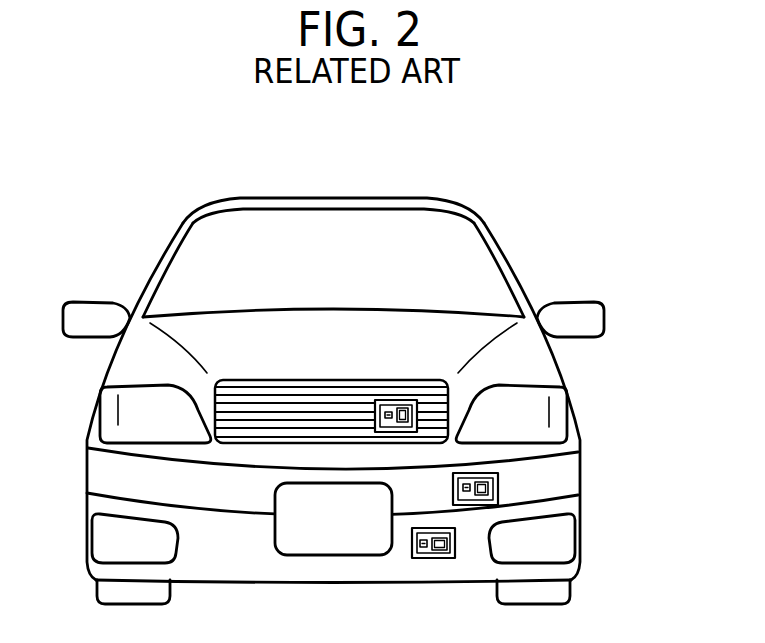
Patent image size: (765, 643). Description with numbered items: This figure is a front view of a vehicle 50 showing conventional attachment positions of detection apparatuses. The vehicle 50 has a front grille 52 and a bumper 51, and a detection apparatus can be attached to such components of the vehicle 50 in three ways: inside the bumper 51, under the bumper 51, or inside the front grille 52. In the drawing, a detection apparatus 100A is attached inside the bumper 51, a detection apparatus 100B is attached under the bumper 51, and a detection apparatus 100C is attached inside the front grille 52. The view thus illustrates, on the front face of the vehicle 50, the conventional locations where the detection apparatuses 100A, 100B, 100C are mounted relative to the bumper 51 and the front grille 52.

The vehicle 50 is at (384, 177).
The bumper 51 is at (557, 477).
The front grille 52 is at (247, 380).
The detection apparatus 100A is at (477, 473).
The detection apparatus 100B is at (430, 558).
The detection apparatus 100C is at (400, 400).